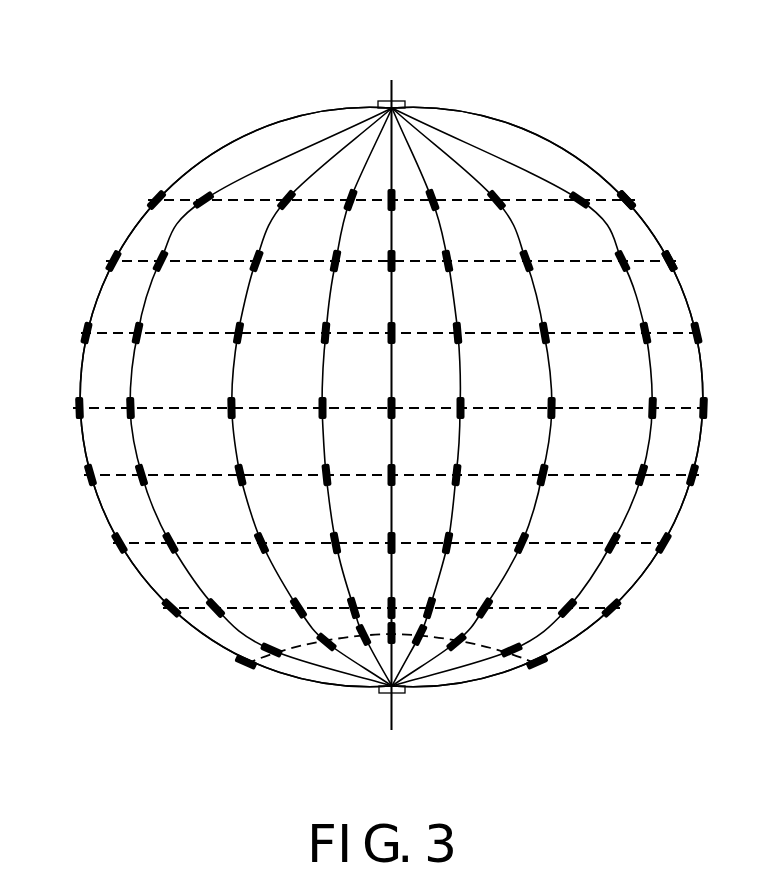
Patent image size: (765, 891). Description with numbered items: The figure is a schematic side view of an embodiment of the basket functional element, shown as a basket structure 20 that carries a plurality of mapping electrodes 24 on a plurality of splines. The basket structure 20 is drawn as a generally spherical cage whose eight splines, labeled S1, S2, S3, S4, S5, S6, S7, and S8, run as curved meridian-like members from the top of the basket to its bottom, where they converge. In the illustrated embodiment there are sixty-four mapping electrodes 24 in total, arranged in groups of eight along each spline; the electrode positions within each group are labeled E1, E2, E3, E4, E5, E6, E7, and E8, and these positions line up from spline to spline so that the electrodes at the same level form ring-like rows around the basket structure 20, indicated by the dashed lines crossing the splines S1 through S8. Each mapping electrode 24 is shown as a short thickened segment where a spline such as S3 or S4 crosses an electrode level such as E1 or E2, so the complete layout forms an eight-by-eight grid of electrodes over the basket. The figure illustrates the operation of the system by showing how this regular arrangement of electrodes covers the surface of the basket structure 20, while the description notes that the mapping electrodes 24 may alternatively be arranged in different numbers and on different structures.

The basket structure 20 is at (138, 78).
The mapping electrodes 24 is at (675, 258).
The spline S1 is at (410, 127).
The spline S2 is at (442, 136).
The spline S3 is at (518, 150).
The spline S4 is at (609, 181).
The spline S5 is at (379, 104).
The spline S6 is at (341, 107).
The spline S7 is at (243, 162).
The spline S8 is at (292, 191).
The mapping electrode E1 is at (151, 198).
The mapping electrode E2 is at (111, 260).
The mapping electrode E3 is at (87, 332).
The mapping electrode E4 is at (79, 407).
The mapping electrode E5 is at (91, 477).
The mapping electrode E6 is at (121, 545).
The mapping electrode E7 is at (169, 609).
The mapping electrode E8 is at (246, 663).